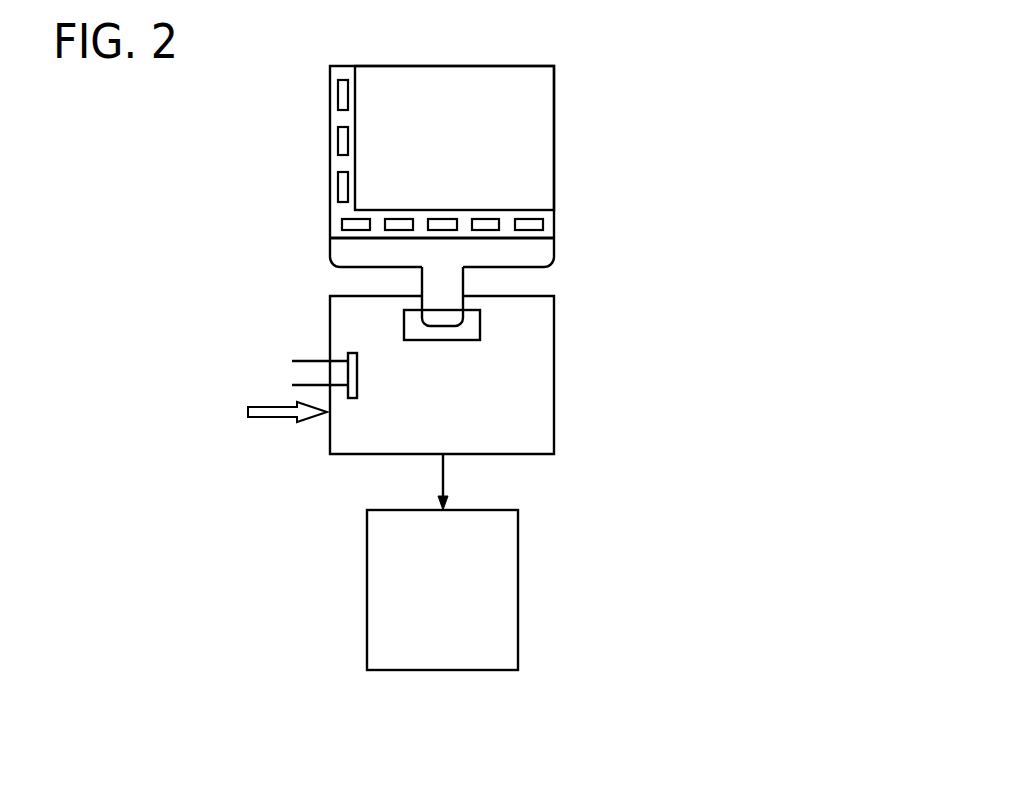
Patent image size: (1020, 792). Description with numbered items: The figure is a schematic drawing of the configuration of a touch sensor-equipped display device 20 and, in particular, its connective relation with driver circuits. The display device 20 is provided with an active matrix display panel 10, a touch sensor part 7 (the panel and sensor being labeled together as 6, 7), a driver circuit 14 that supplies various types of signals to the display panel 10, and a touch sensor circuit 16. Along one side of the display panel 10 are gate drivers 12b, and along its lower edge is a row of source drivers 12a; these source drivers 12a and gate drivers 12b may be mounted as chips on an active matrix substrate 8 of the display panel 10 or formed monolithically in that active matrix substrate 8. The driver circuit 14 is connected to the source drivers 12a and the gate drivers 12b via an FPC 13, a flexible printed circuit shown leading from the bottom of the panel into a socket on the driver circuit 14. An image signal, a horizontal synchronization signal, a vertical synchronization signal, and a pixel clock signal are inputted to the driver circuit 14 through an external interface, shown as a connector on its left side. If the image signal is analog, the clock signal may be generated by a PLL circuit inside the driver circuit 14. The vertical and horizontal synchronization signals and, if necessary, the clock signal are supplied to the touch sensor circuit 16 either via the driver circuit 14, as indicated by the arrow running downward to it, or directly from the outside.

The display panel 6 is at (454, 111).
The touch sensor part 7 is at (395, 88).
The active matrix substrate 8 is at (309, 147).
The display panel 10 is at (540, 98).
The source drivers 12a is at (543, 225).
The gate drivers 12b is at (343, 190).
The FPC 13 is at (554, 257).
The driver circuit 14 is at (554, 362).
The touch sensor circuit 16 is at (518, 582).
The touch sensor-equipped display device 20 is at (632, 73).